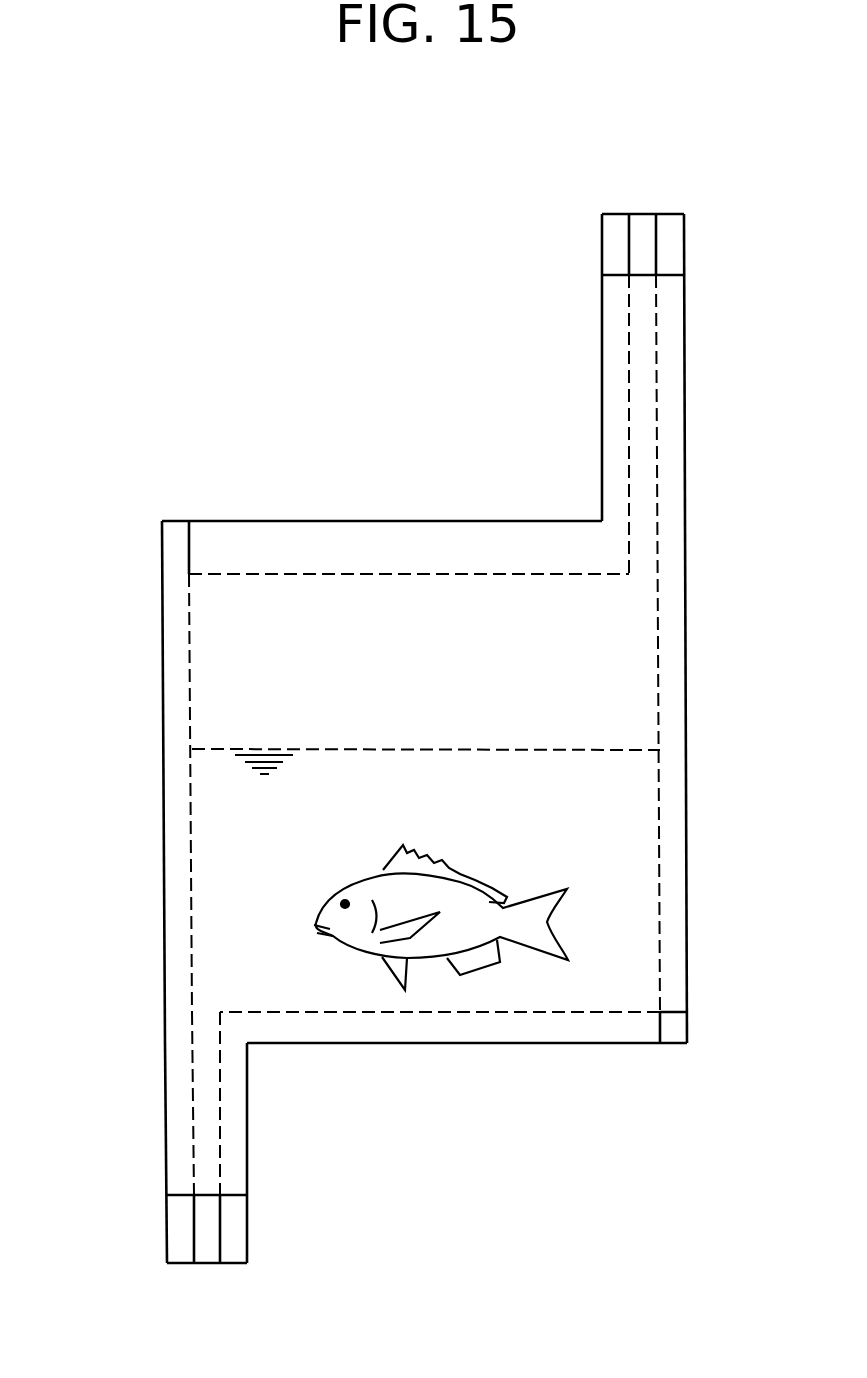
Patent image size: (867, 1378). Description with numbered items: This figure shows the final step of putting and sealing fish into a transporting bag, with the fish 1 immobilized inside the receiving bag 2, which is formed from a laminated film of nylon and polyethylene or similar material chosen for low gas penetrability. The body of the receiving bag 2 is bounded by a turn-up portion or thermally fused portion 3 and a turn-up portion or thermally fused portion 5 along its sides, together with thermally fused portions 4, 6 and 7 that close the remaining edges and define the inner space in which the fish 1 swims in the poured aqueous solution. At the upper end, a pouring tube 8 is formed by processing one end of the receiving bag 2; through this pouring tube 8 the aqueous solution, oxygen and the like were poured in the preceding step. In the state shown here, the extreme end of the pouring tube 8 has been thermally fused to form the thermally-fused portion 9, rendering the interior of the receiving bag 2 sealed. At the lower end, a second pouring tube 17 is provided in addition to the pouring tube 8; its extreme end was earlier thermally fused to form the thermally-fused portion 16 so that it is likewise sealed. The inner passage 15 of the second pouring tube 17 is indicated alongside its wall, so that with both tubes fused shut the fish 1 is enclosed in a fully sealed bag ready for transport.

The fish 1 is at (482, 875).
The receiving bag 2 is at (687, 657).
The turn-up portion or thermally fused portion 3 is at (668, 772).
The thermally fused portion 4 is at (470, 1030).
The turn-up portion or thermally fused portion 5 is at (180, 786).
The thermally fused portion 6 is at (385, 557).
The thermally fused portion 7 is at (617, 358).
The pouring tube 8 is at (685, 350).
The thermally fused portion 9 is at (638, 233).
The outlet pipe inner wall 15 is at (232, 1118).
The thermally-fused portion 16 is at (210, 1250).
The second pouring tube 17 is at (163, 1137).